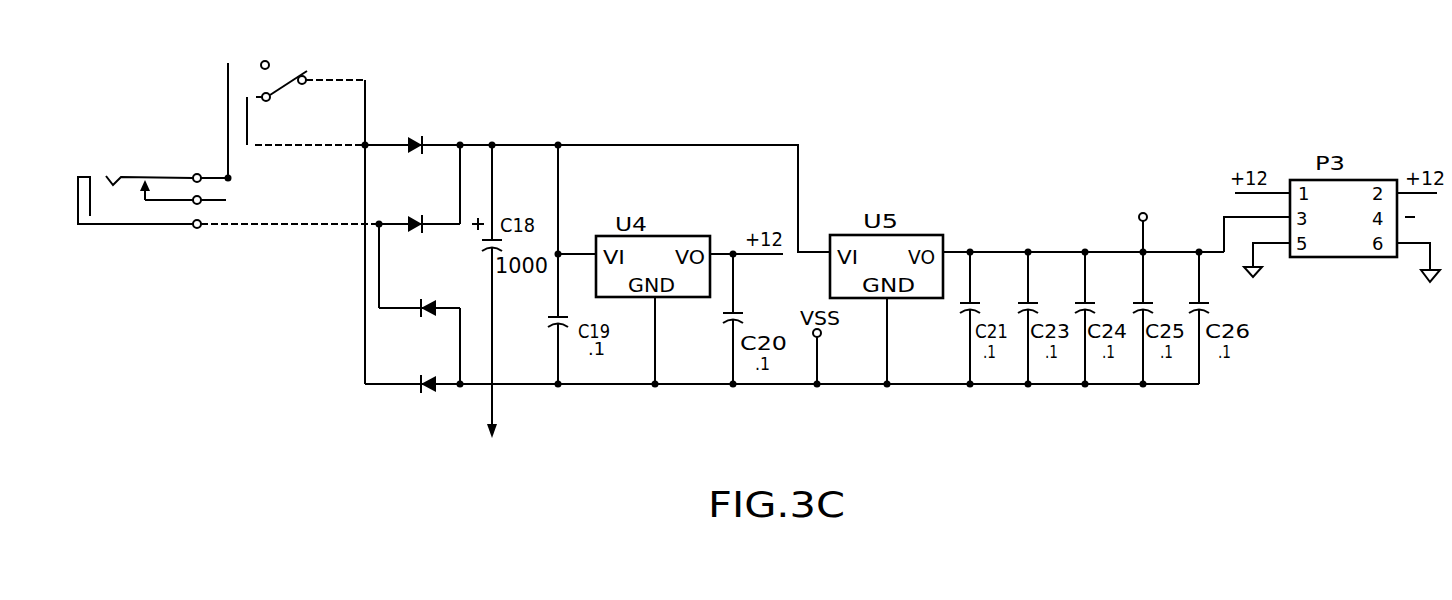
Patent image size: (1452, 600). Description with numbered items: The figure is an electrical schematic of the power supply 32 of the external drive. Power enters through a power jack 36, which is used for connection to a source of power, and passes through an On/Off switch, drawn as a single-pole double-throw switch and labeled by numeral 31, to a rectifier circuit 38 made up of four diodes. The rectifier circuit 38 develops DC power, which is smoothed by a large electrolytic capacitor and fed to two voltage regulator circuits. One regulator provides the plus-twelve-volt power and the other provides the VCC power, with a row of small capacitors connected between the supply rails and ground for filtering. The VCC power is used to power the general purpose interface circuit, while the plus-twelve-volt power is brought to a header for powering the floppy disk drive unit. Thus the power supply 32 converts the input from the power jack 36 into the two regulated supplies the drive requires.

The power switch (SWSPDT) 31 is at (306, 84).
The power supply 32 is at (1136, 158).
The power jack 36 is at (207, 280).
The rectifier circuit 38 is at (452, 125).